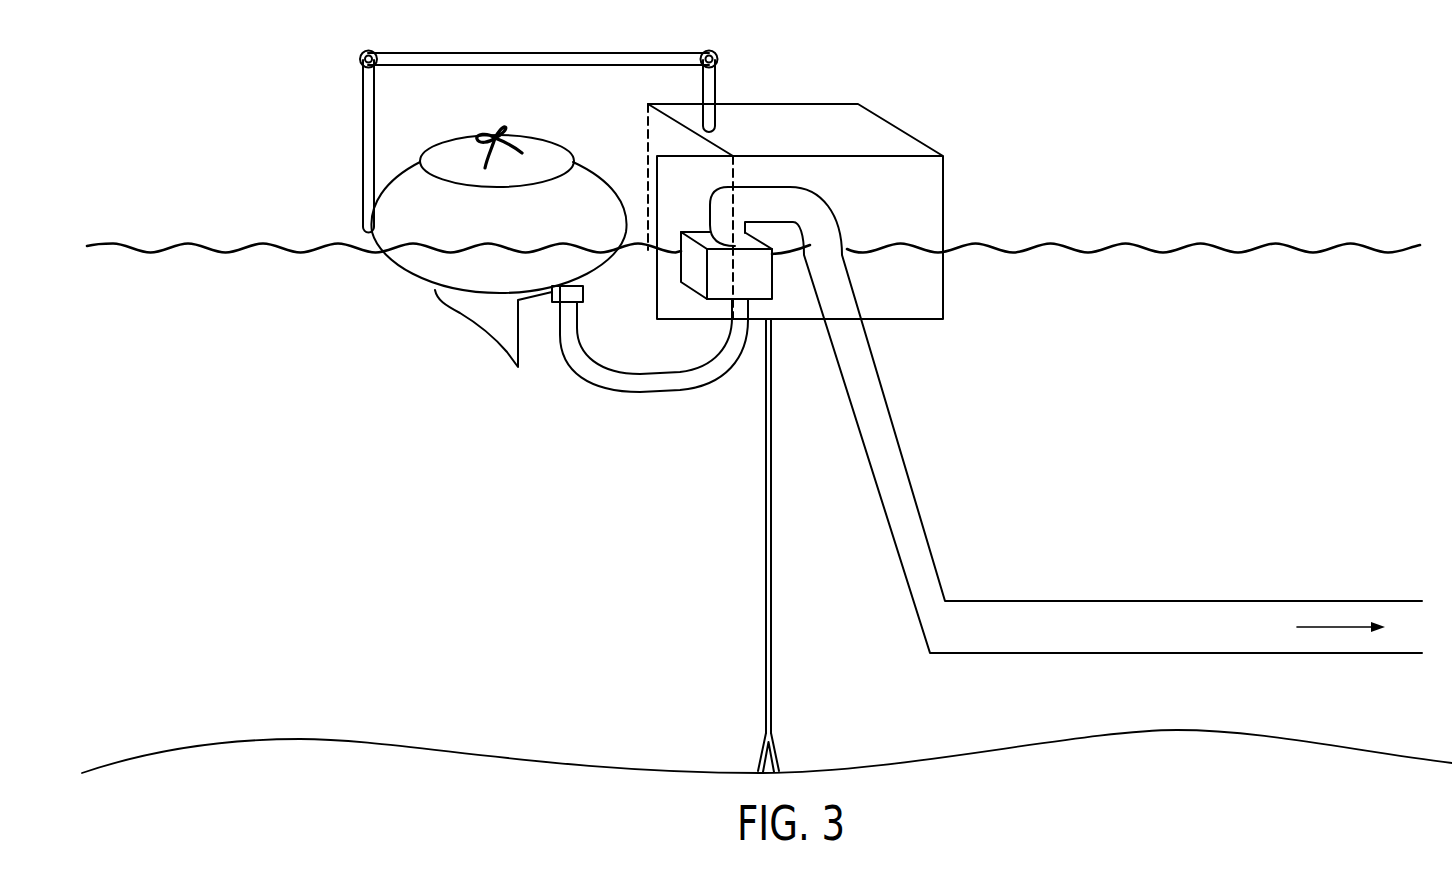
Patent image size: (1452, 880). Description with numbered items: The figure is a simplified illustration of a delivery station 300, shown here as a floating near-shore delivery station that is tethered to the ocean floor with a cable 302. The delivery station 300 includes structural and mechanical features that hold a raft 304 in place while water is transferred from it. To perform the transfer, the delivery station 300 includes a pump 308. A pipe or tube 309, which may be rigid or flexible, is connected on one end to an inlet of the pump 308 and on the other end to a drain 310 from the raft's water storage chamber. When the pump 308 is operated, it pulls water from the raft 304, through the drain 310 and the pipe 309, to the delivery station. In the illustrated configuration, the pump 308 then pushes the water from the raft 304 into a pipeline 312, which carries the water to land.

The delivery station 300 is at (918, 106).
The cable 302 is at (763, 570).
The raft 304 is at (395, 272).
The pump 308 is at (743, 265).
The pipe or tube 309 is at (635, 391).
The drain 310 is at (556, 303).
The pipeline 312 is at (900, 440).